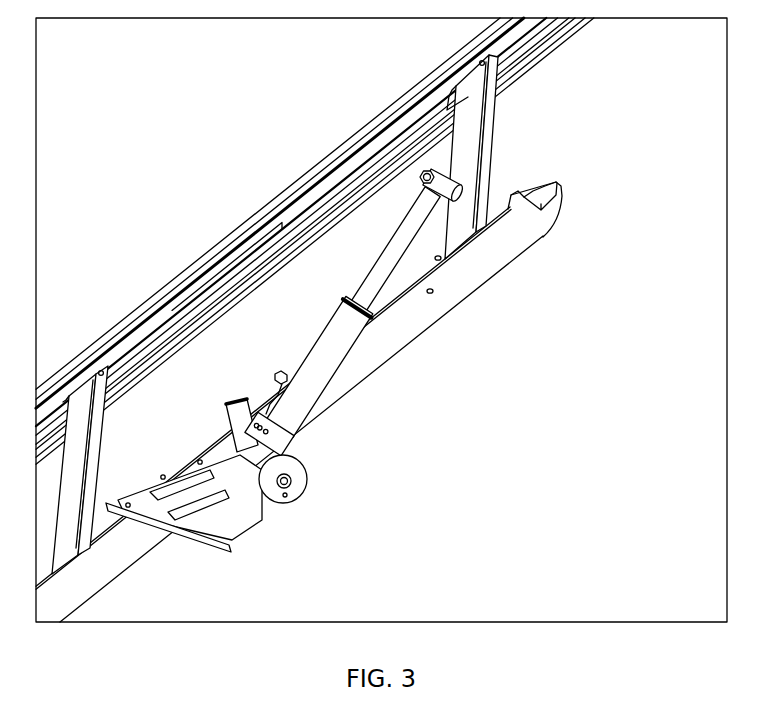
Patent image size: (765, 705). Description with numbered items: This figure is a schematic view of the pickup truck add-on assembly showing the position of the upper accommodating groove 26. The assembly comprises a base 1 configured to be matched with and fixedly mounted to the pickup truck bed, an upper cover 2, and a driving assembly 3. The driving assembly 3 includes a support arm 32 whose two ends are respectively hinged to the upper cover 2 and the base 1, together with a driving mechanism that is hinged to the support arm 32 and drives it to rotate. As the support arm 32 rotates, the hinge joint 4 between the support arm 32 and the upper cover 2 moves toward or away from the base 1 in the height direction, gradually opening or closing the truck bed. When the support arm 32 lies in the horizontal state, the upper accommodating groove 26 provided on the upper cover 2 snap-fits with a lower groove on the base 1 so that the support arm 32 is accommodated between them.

The base 1 is at (466, 290).
The upper cover 2 is at (285, 187).
The driving assembly 3 is at (315, 412).
The hinge joint 4 is at (470, 75).
The upper accommodating groove 26 is at (210, 275).
The support arm 32 is at (66, 463).